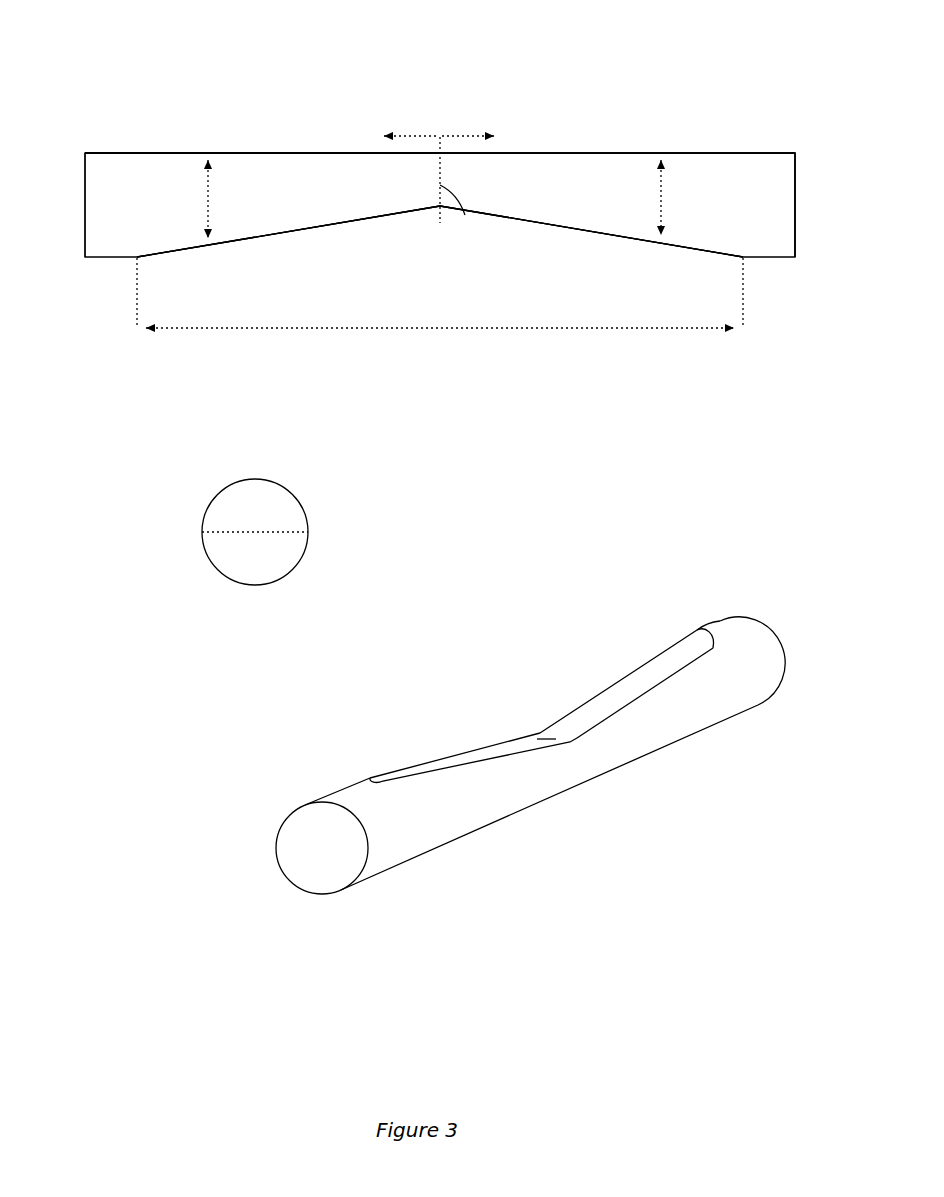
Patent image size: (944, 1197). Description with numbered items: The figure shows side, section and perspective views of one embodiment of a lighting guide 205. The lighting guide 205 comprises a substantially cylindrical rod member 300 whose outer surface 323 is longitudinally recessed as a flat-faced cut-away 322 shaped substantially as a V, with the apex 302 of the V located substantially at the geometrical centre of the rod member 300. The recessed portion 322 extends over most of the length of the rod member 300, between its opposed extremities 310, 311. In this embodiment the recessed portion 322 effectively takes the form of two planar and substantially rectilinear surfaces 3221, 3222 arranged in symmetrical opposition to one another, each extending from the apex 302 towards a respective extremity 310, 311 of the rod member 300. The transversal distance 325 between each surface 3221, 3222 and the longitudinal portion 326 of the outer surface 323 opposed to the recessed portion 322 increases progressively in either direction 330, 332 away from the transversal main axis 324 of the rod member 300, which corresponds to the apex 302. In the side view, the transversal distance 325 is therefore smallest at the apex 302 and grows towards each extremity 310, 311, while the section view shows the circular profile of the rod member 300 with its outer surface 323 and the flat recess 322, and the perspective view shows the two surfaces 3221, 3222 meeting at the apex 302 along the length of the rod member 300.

The lighting guide 205 is at (183, 74).
The rod member 300 is at (746, 153).
The apex 302 is at (440, 207).
The extremity 310 is at (84, 205).
The extremity 311 is at (796, 206).
The flat-faced cut-away 322 is at (231, 328).
The planar surface 3221 is at (258, 241).
The planar surface 3222 is at (626, 245).
The outer surface 323 is at (107, 164).
The transversal main axis 324 is at (440, 185).
The transversal distance 325 is at (208, 180).
The longitudinal portion 326 is at (278, 151).
The direction 330 is at (399, 135).
The direction 332 is at (477, 135).